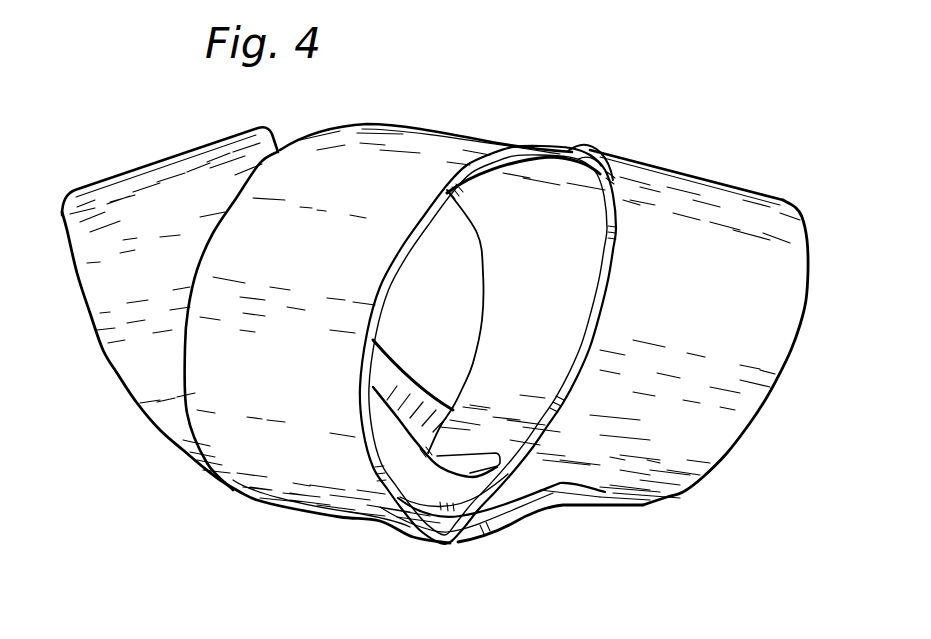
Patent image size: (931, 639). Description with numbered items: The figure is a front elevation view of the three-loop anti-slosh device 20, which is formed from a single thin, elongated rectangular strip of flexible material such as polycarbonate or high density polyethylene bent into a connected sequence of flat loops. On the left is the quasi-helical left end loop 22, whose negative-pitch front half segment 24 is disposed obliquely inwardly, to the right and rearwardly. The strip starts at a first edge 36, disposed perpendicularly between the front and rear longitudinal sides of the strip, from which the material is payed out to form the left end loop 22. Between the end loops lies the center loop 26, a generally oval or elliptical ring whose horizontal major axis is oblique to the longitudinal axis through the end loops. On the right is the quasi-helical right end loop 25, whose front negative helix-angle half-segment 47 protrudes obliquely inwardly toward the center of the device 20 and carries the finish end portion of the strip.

The anti-slosh device 20 is at (645, 98).
The left end loop 22 is at (87, 183).
The front half segment 24 is at (120, 355).
The right end loop 25 is at (810, 212).
The center loop 26 is at (415, 112).
The first edge 36 is at (478, 468).
The front negative helix-angle half-segment 47 is at (730, 382).